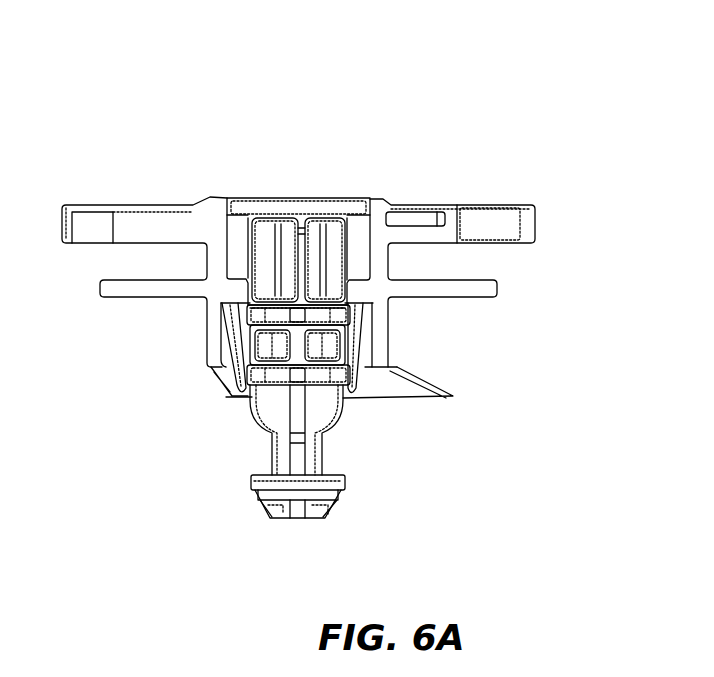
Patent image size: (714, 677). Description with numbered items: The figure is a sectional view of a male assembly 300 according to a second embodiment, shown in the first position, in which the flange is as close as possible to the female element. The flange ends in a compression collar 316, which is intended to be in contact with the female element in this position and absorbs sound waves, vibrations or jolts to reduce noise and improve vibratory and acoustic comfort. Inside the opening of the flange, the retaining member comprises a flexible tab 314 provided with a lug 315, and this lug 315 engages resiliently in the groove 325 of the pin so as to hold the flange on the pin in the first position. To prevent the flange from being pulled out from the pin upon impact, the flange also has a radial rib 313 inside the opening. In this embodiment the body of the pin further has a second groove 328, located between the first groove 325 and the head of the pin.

The male assembly 300 is at (138, 122).
The radial rib 313 is at (356, 266).
The second groove 328 is at (250, 313).
The flexible tab 314 is at (216, 351).
The groove 325 is at (222, 383).
The lug 315 is at (229, 393).
The compression collar 316 is at (454, 380).